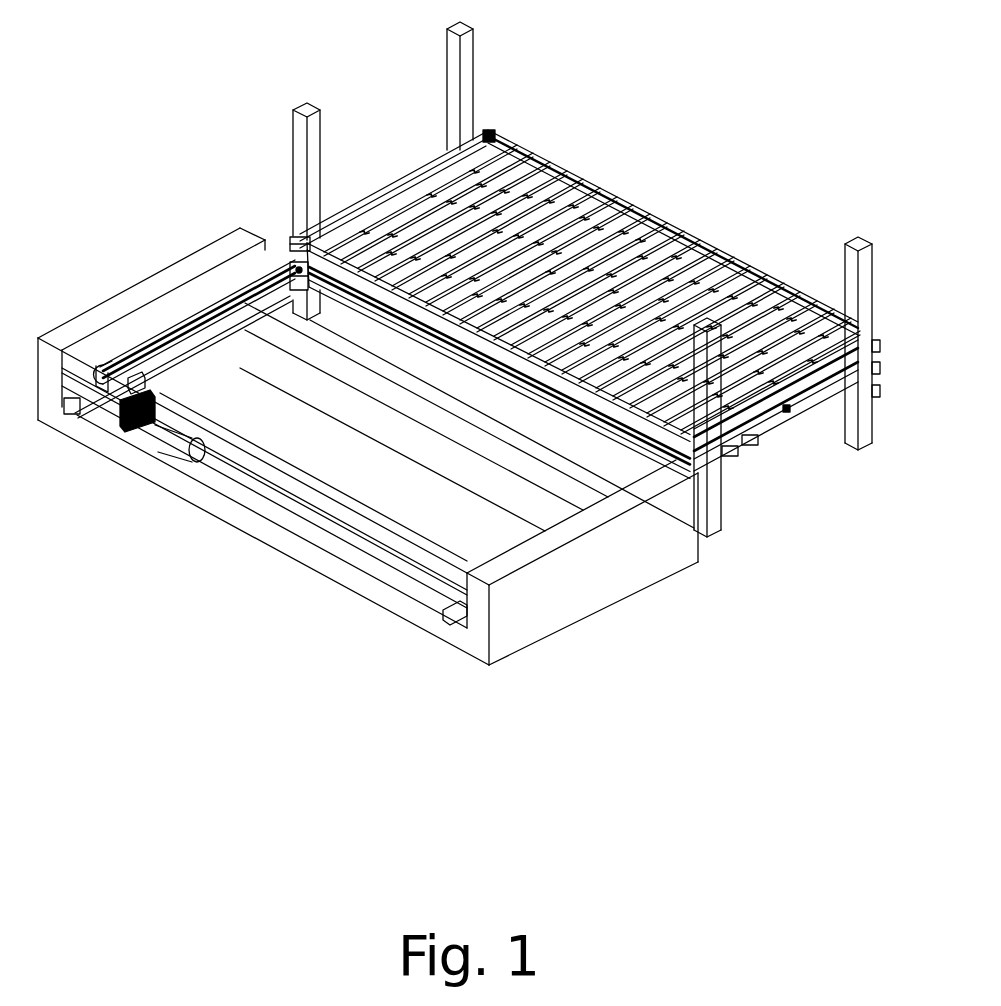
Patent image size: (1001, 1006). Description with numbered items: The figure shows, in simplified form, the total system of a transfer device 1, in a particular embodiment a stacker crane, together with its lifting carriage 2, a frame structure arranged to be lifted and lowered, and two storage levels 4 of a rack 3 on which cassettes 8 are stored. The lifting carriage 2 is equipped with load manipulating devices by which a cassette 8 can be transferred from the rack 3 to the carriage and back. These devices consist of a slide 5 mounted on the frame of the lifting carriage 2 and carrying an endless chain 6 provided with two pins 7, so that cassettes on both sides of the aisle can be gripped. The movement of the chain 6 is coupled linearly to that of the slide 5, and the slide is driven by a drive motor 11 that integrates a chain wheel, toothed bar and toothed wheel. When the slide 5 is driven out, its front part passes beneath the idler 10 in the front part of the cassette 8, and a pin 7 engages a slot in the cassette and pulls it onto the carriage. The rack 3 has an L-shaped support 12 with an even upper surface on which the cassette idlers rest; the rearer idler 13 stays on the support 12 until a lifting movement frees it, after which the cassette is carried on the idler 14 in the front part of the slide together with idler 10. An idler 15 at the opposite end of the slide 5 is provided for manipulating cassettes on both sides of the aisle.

The transfer device 1 is at (138, 150).
The lifting carriage 2 is at (585, 570).
The rack 3 is at (465, 68).
The storage levels 4 is at (785, 410).
The slide 5 is at (202, 336).
The endless chain 6 is at (108, 352).
The pins 7 is at (100, 373).
The cassette 8 is at (350, 273).
The idler 10 is at (318, 232).
The drive motor 11 is at (140, 447).
The support 12 is at (727, 442).
The rearer idler 13 is at (485, 140).
The idler 14 is at (292, 268).
The idler 15 is at (100, 417).